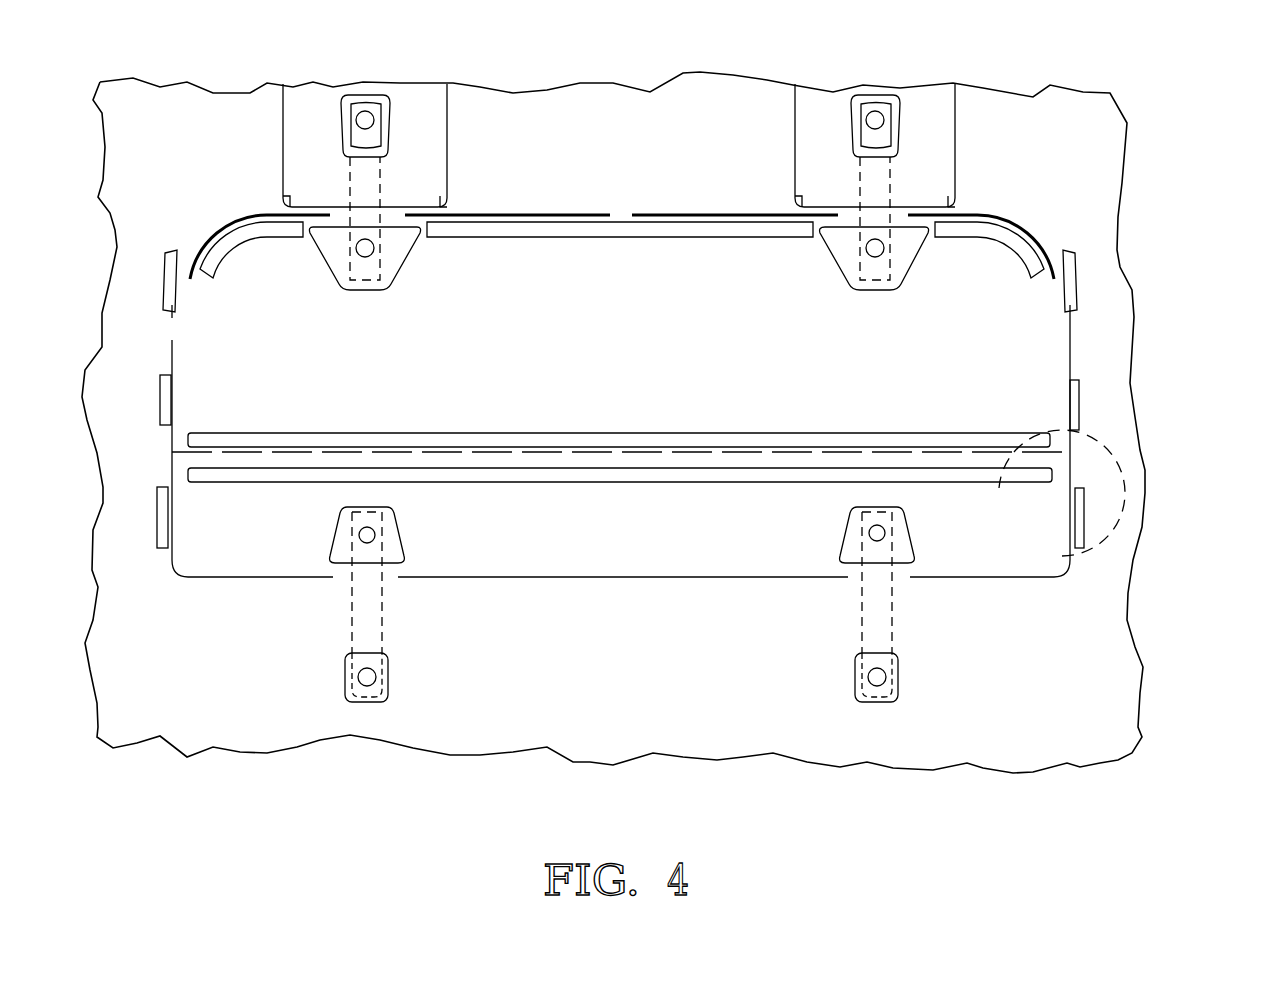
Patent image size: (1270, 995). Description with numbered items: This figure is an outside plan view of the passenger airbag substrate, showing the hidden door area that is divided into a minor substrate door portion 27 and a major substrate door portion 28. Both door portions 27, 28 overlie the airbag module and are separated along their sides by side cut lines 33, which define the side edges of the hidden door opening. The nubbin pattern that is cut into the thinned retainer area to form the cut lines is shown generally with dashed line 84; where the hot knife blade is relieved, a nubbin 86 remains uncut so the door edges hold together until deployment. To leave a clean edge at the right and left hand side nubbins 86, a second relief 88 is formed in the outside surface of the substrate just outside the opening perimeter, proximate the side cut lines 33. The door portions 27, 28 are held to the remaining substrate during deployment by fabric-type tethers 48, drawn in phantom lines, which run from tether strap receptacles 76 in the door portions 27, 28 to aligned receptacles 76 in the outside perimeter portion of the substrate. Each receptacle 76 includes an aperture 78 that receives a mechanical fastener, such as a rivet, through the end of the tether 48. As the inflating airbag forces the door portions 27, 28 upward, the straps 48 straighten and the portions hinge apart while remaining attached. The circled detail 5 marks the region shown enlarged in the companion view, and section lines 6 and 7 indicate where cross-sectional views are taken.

The detail view of FIG. 5 is at (1103, 443).
The section line 6- 6 is at (987, 500).
The section line 7- 7 is at (965, 541).
The minor substrate door portion 27 is at (505, 546).
The major substrate door portion 28 is at (478, 364).
The side cut lines 33 is at (1070, 320).
The tether 48 is at (980, 777).
The tether strap receptacle 76 is at (820, 577).
The aperture 78 is at (877, 686).
The dashed line 84 is at (662, 577).
The nubbin 86 is at (625, 577).
The second relief 88 is at (1083, 547).